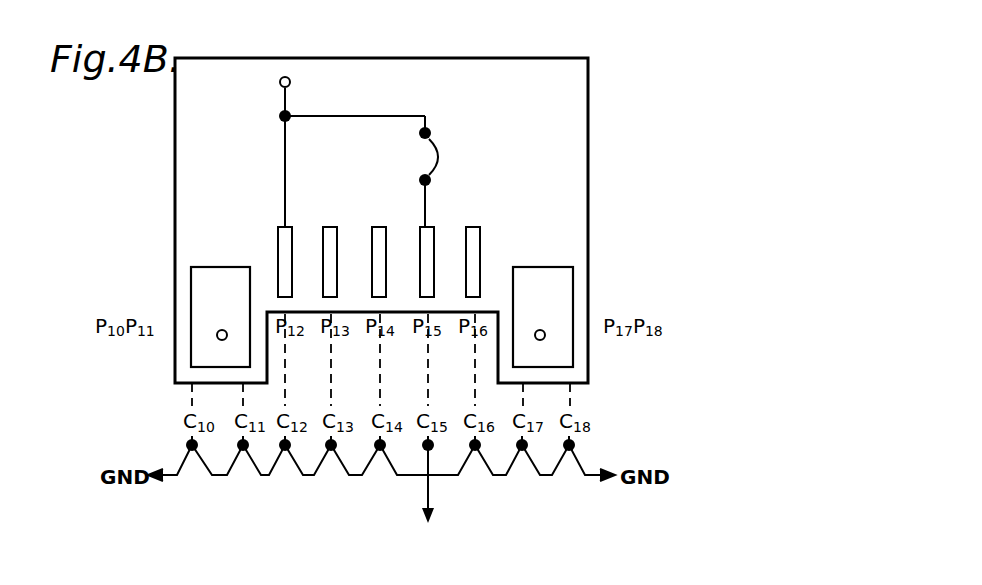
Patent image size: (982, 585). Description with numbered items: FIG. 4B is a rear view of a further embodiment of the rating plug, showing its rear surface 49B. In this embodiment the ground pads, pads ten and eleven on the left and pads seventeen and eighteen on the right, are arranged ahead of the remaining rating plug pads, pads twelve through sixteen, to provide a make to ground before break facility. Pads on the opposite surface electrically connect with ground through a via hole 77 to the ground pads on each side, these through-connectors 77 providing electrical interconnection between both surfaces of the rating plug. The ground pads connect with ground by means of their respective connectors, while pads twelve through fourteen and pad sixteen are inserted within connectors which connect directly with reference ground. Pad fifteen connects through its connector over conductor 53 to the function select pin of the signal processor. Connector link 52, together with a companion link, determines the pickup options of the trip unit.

The rating plug surface 49B is at (722, 203).
The through-connector 77 is at (282, 82).
The connector link 52 is at (440, 157).
The conductor 53 is at (435, 500).